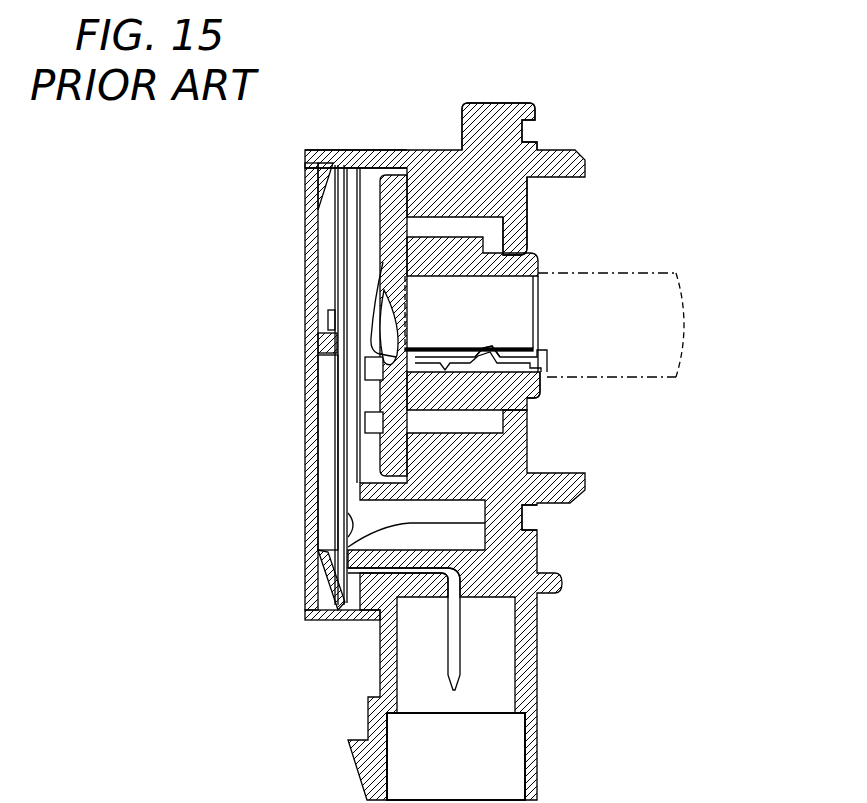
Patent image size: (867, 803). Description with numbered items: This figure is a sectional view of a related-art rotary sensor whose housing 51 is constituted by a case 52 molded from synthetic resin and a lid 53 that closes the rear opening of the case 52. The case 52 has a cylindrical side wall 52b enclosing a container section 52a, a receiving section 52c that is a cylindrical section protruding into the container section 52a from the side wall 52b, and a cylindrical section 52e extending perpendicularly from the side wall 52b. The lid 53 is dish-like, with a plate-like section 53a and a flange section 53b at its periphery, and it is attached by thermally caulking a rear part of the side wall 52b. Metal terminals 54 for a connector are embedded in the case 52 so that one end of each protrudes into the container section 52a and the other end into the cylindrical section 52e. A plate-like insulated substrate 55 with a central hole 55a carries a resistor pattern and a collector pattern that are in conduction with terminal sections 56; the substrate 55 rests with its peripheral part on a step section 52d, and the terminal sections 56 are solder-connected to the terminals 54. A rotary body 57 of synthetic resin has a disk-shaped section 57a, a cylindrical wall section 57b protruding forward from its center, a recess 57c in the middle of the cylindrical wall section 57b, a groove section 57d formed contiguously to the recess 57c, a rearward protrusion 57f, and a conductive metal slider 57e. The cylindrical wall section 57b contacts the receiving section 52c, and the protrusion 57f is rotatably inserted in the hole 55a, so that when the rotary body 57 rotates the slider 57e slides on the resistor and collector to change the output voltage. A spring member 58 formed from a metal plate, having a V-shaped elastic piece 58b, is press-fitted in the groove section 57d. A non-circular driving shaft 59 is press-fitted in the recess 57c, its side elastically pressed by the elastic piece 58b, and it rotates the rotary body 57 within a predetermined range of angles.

The housing 51 is at (300, 624).
The case 52 is at (430, 143).
The container section 52a is at (355, 244).
The side wall 52b is at (493, 110).
The receiving section 52c is at (503, 245).
The step section 52d is at (323, 157).
The cylindrical section 52e is at (540, 652).
The lid 53 is at (303, 522).
The plate-like section 53a is at (328, 320).
The flange section 53b is at (323, 170).
The terminals 54 is at (448, 650).
The insulated substrate 55 is at (350, 233).
The hole 55a is at (335, 390).
The terminal sections 56 is at (485, 523).
The rotary body 57 is at (375, 190).
The disk-shaped section 57a is at (392, 448).
The cylindrical wall section 57b is at (527, 258).
The recess 57c is at (500, 299).
The groove section 57d is at (537, 378).
The slider 57e is at (362, 352).
The protrusion 57f is at (368, 297).
The spring member 58 is at (500, 407).
The elastic piece 58b is at (512, 328).
The driving shaft 59 is at (680, 342).